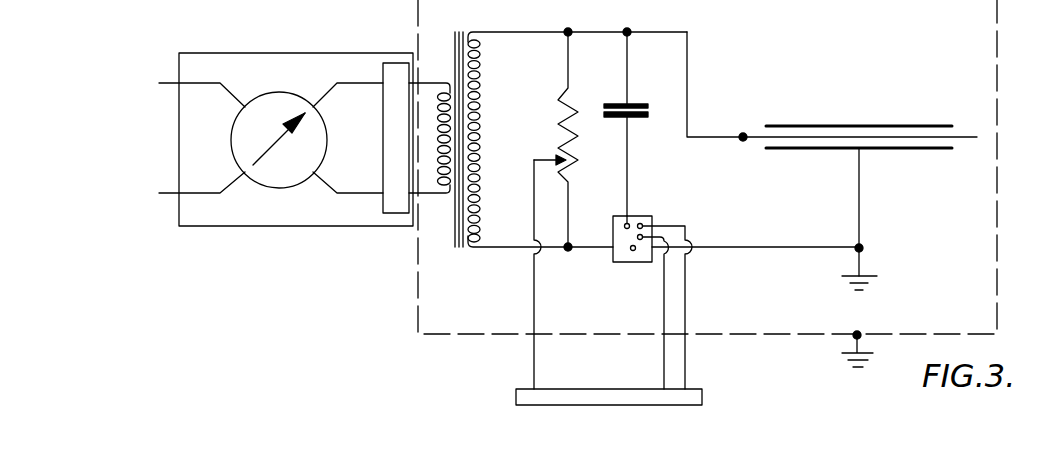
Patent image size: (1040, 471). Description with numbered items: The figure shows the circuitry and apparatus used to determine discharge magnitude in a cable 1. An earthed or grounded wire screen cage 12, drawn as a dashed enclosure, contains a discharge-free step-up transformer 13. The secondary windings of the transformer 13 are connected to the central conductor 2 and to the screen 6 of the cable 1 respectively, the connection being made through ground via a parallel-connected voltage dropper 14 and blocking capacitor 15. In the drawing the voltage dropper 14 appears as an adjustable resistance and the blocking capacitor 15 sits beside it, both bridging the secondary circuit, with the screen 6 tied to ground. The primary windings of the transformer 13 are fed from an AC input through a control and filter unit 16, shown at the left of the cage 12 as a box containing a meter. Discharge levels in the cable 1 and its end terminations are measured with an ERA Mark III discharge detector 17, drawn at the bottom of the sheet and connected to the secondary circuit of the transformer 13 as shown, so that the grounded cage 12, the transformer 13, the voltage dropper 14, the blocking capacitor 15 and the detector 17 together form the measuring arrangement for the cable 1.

The cable 1 is at (895, 125).
The central conductor 2 is at (957, 137).
The screen 6 is at (913, 150).
The wire screen cage 12 is at (478, 335).
The step-up transformer 13 is at (450, 202).
The voltage dropper 14 is at (563, 95).
The blocking capacitor 15 is at (640, 102).
The control and filter unit 16 is at (327, 52).
The discharge detector 17 is at (517, 397).